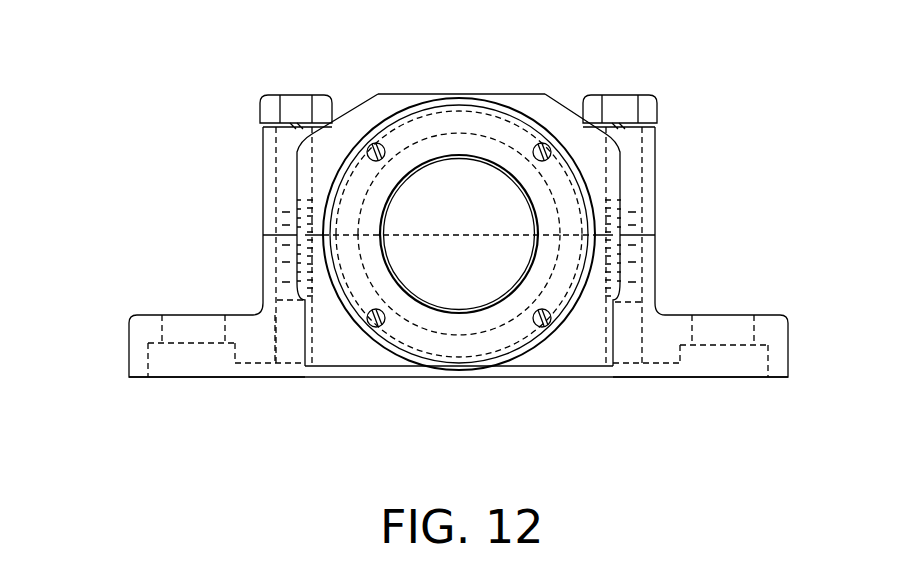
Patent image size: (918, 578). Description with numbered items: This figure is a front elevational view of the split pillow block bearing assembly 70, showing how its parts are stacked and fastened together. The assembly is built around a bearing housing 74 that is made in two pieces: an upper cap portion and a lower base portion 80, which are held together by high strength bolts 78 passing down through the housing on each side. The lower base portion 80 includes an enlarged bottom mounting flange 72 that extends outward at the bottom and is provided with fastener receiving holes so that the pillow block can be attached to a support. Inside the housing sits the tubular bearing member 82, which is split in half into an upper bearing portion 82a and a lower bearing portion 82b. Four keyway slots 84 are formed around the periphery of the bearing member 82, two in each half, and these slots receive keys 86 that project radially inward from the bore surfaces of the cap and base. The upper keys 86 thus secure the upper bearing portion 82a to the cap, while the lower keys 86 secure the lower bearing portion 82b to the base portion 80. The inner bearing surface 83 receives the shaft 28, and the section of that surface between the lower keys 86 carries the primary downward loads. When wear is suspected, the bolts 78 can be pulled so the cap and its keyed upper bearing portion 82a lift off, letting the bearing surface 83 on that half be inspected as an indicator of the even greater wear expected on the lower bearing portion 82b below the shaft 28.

The bearing assembly 70 is at (220, 66).
The bottom mounting flange 72 is at (130, 338).
The bearing housing 74 is at (668, 262).
The high strength bolts 78 is at (645, 150).
The lower base portion 80 is at (665, 328).
The tubular bearing member 82 is at (594, 192).
The upper bearing portion 82a is at (513, 138).
The lower bearing portion 82b is at (487, 345).
The bearing surface 83 is at (434, 298).
The keyway slots 84 is at (540, 335).
The keys 86 is at (565, 145).
The shaft 28 is at (436, 188).